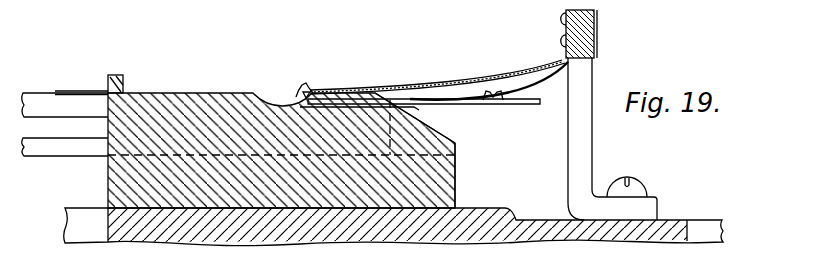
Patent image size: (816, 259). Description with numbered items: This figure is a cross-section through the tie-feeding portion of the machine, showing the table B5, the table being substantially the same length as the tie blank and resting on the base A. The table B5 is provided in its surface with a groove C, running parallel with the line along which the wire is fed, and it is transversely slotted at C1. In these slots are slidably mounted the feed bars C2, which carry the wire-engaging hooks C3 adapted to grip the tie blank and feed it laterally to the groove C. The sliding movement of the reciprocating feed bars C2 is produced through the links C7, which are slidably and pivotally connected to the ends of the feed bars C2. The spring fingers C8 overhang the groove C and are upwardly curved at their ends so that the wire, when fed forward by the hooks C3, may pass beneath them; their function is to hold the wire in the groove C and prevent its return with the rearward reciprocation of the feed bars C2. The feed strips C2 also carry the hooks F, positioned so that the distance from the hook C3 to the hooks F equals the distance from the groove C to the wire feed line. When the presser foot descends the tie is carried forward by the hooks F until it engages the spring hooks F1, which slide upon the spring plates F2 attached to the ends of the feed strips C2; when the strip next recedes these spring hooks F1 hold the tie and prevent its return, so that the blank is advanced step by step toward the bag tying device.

The base A is at (533, 219).
The groove C is at (252, 95).
The transverse slot C1 is at (445, 142).
The feed bar C2 is at (42, 98).
The wire-engaging hook C3 is at (110, 78).
The link C7 is at (123, 75).
The spring finger C8 is at (445, 89).
The hook F is at (297, 93).
The spring hook F1 is at (545, 90).
The spring plate F2 is at (518, 104).
The table B5 is at (457, 190).